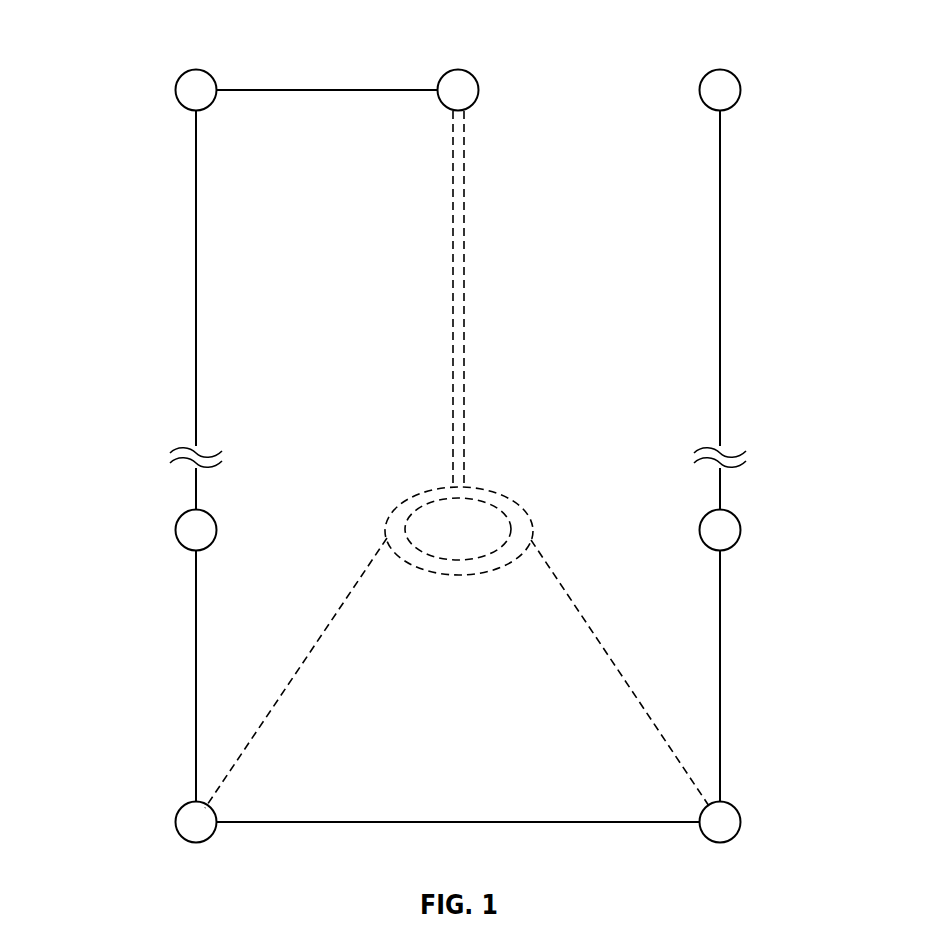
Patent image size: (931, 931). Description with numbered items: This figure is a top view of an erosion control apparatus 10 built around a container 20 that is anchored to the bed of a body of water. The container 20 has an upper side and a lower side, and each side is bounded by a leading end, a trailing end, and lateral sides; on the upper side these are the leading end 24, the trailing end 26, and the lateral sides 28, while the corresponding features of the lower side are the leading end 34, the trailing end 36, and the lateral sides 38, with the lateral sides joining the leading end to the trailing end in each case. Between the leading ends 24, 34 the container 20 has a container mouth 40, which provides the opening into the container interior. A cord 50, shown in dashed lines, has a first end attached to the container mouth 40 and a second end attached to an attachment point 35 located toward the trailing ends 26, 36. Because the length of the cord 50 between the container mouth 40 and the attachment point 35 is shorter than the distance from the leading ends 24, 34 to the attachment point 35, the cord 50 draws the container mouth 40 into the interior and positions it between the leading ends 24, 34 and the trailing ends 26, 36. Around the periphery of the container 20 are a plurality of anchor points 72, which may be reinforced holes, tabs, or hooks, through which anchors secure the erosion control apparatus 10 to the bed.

The erosion control apparatus 10 is at (144, 930).
The container 20 is at (154, 203).
The leading end 24 is at (457, 859).
The leading end 34 is at (310, 824).
The trailing end 26 is at (326, 57).
The trailing end 36 is at (308, 88).
The lateral sides 28 is at (766, 456).
The lateral sides 38 is at (722, 268).
The attachment point 35 is at (455, 69).
The container mouth 40 is at (490, 492).
The cord 50 is at (464, 223).
The anchor points 72 is at (193, 69).